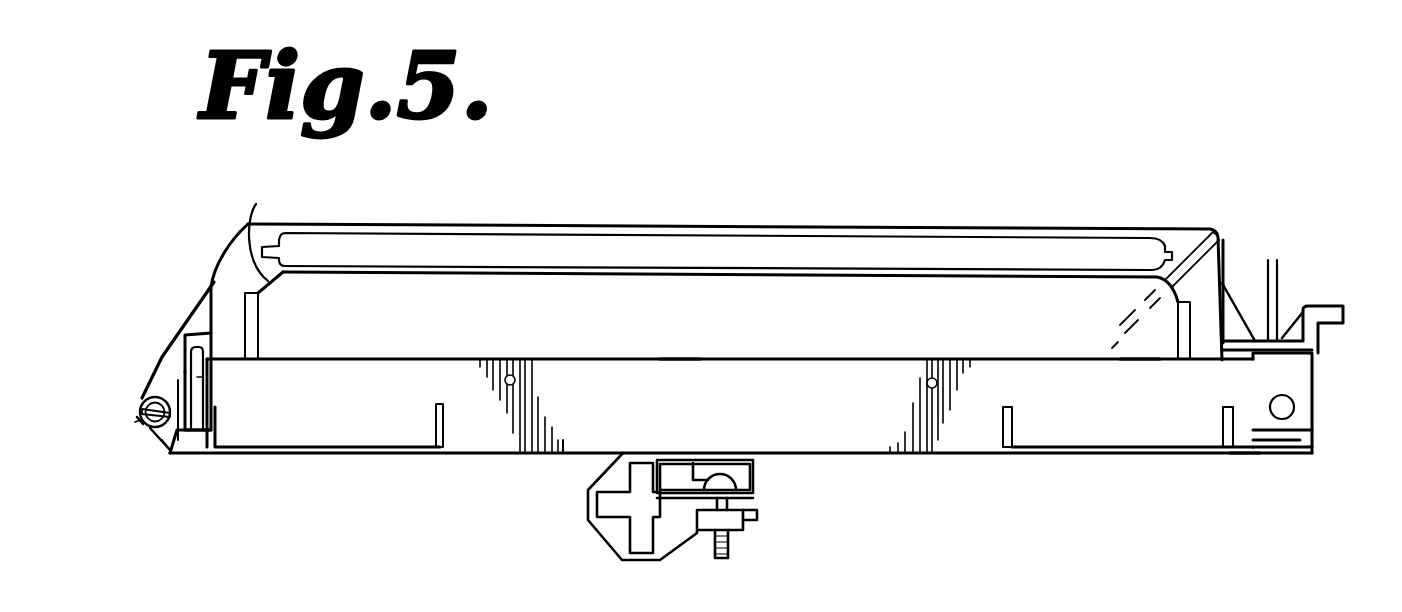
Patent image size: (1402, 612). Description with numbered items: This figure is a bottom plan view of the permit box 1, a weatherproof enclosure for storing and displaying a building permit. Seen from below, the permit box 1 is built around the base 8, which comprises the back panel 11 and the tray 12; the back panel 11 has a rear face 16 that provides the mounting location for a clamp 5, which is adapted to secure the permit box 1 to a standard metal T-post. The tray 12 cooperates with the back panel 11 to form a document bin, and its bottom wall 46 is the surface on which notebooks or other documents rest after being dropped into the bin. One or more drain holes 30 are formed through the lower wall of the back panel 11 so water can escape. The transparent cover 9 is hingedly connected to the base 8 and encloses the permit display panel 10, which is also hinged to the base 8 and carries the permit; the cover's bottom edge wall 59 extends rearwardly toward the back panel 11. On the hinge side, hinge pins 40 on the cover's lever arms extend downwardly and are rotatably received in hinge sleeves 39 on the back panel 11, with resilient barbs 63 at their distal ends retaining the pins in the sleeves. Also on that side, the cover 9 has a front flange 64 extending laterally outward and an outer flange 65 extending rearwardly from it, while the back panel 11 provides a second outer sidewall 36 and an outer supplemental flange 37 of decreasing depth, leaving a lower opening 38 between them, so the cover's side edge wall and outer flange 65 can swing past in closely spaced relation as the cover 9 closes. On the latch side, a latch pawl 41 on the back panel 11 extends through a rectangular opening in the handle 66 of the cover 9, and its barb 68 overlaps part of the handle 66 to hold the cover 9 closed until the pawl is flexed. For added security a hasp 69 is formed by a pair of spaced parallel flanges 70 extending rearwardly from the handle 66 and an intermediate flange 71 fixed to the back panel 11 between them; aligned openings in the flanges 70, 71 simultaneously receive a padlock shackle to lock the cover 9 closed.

The permit box 1 is at (294, 528).
The clamp 5 is at (600, 538).
The base 8 is at (1247, 462).
The transparent cover 9 is at (1197, 224).
The permit display panel 10 is at (1005, 236).
The back panel 11 is at (672, 357).
The tray 12 is at (256, 204).
The rear face 16 is at (950, 456).
The drain hole 30 is at (516, 380).
The second outer sidewall 36 is at (200, 390).
The outer supplemental flange 37 is at (164, 442).
The lower opening 38 is at (200, 378).
The hinge sleeve 39 is at (138, 417).
The hinge pin 40 is at (153, 403).
The latch pawl 41 is at (1278, 284).
The bottom wall 46 is at (868, 325).
The bottom edge wall 59 is at (1157, 338).
The resilient barb 63 is at (141, 425).
The front flange 64 is at (203, 334).
The outer flange 65 is at (162, 356).
The handle 66 is at (1318, 306).
The barb 68 is at (1262, 330).
The hasp 69 is at (1322, 368).
The parallel flange 70 is at (1313, 393).
The intermediate flange 71 is at (1313, 453).